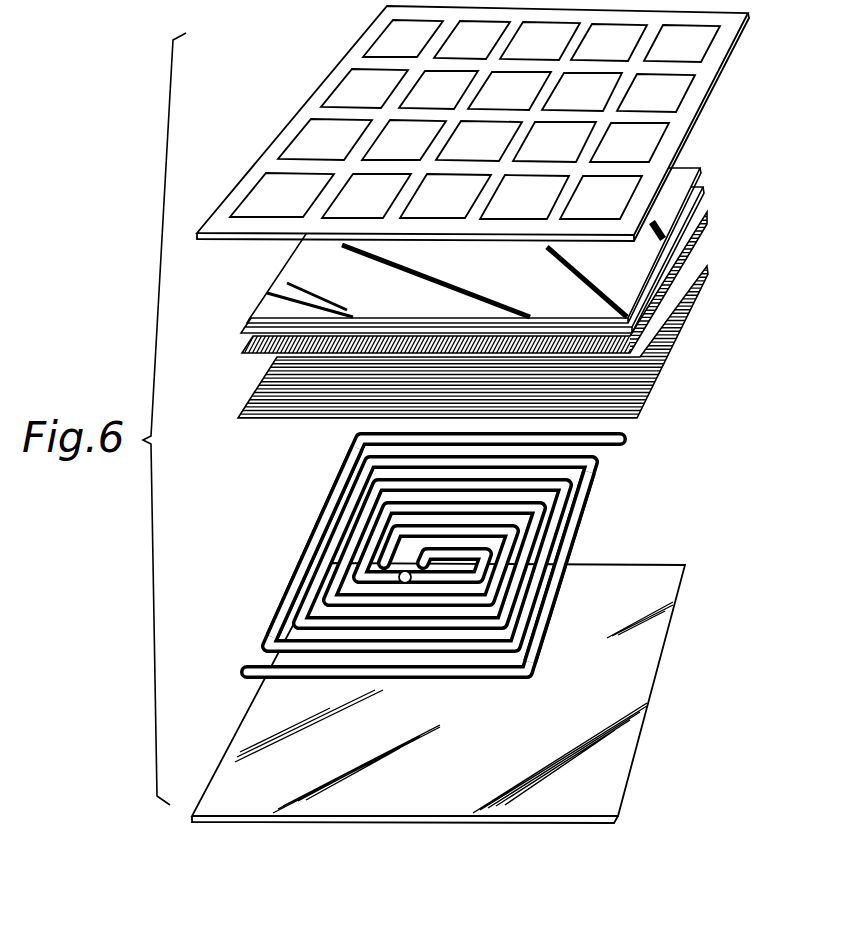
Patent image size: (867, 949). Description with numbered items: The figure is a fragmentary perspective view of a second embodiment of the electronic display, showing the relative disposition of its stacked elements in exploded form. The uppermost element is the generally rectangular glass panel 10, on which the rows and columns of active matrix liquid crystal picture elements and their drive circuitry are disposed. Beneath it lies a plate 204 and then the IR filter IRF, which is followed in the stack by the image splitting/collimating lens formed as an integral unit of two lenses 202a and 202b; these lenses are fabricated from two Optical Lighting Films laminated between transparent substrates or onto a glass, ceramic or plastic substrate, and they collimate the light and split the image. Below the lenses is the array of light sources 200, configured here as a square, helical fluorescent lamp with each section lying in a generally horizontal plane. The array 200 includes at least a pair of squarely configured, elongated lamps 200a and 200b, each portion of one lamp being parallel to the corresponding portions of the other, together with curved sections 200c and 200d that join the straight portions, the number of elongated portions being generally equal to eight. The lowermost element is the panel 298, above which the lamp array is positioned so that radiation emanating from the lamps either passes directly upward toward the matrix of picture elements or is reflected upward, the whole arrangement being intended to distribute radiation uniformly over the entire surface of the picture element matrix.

The glass panel 10 is at (306, 106).
The pattern plate 204 is at (284, 277).
The IR filter IRF is at (250, 323).
The lens 202a is at (243, 353).
The lens 202b is at (254, 388).
The array of light sources 200 is at (476, 559).
The squarely configured elongated lamp 200a is at (347, 492).
The squarely configured elongated lamp 200b is at (592, 491).
The curved section 200c is at (530, 667).
The curved section 200d is at (370, 433).
The base plate 298 is at (231, 762).